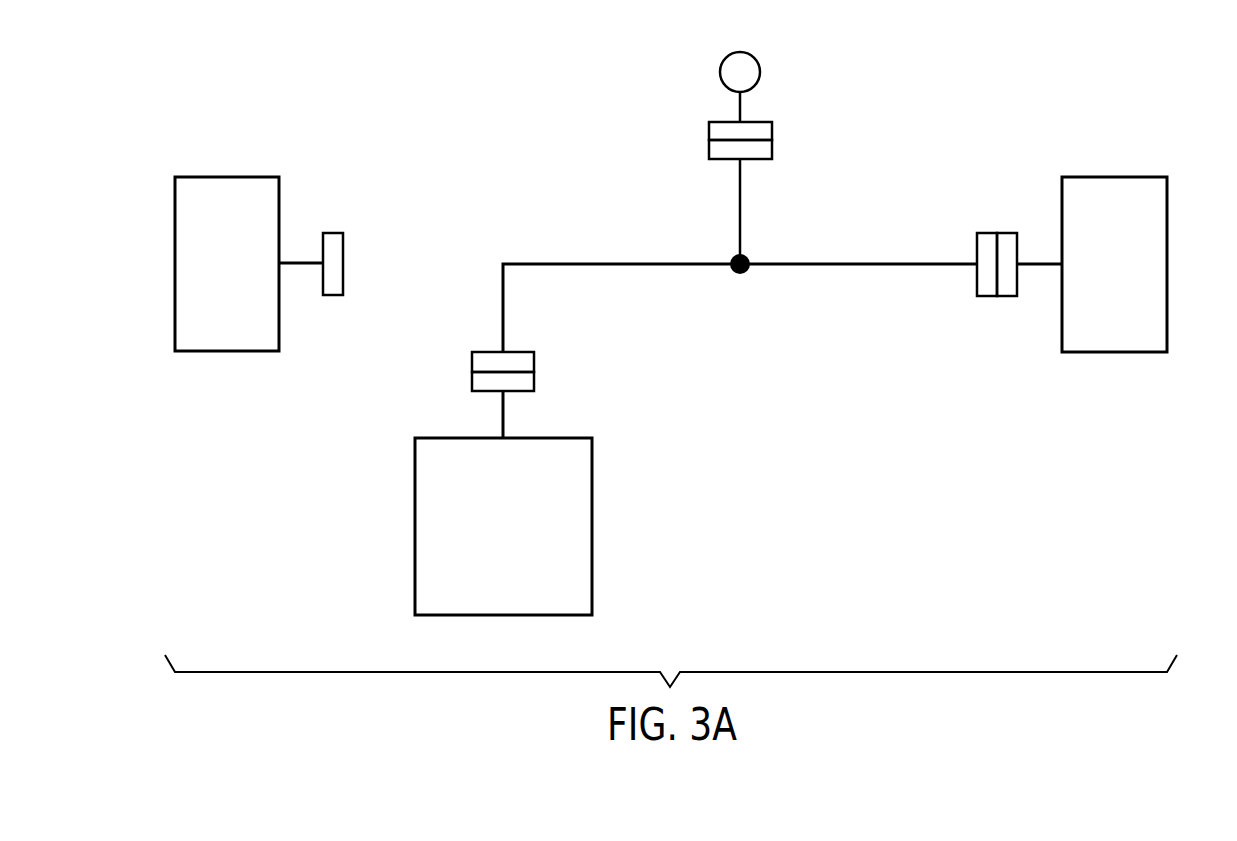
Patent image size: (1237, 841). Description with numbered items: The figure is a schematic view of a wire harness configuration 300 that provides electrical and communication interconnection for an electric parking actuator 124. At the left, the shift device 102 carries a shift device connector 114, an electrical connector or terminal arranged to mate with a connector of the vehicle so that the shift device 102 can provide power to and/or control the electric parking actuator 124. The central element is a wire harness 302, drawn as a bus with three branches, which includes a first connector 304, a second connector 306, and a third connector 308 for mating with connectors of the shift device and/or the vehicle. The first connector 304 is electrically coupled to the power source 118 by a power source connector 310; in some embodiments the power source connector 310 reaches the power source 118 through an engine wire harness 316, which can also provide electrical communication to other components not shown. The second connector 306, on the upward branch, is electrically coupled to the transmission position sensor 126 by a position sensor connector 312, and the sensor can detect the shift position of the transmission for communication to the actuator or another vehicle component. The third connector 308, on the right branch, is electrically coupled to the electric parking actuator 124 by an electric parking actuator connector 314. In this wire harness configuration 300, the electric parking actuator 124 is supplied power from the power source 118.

The wire harness configuration 300 is at (1140, 66).
The shift device 102 is at (227, 177).
The shift device connector 114 is at (331, 233).
The wire harness 302 is at (610, 264).
The transmission position sensor 126 is at (746, 53).
The position sensor connector 312 is at (772, 130).
The second connector 306 is at (772, 150).
The first connector 304 is at (534, 362).
The power source connector 310 is at (534, 380).
The engine wire harness 316 is at (505, 415).
The power source 118 is at (592, 528).
The electric parking actuator connector 314 is at (1007, 233).
The third connector 308 is at (988, 296).
The electric parking actuator 124 is at (1167, 258).